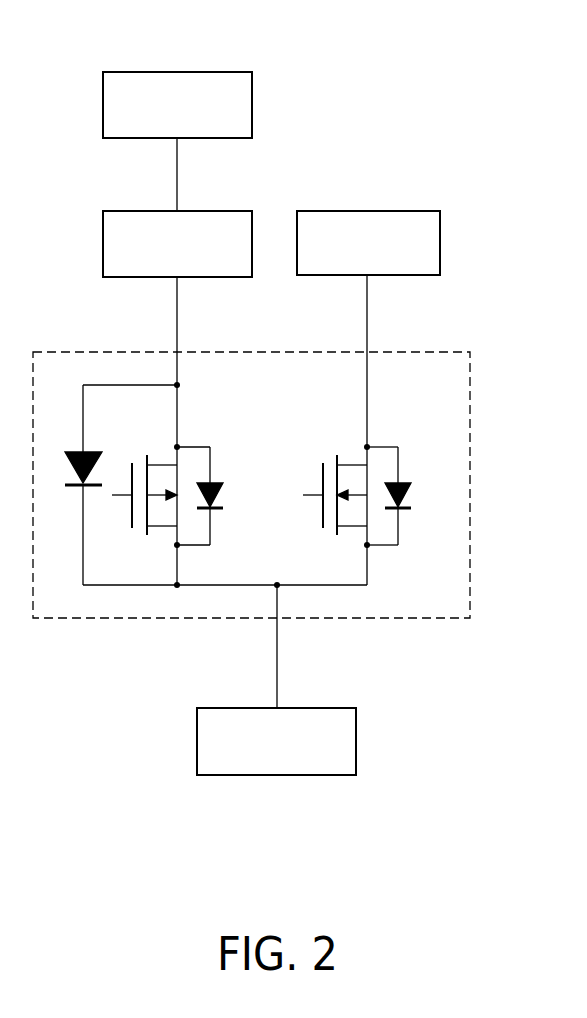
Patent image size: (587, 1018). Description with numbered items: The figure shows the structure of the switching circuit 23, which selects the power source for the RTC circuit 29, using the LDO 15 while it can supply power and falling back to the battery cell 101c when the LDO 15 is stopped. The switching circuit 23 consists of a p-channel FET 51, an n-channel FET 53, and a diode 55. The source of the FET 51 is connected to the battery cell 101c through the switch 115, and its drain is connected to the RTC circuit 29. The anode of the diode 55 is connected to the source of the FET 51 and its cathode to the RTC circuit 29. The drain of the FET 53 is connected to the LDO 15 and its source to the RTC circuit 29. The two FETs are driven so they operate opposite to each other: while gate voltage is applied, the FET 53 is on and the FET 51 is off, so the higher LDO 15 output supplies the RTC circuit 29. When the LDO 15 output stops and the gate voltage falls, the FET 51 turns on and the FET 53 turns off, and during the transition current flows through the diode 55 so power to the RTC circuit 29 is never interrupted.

The battery cell 101c is at (234, 72).
The switch 115 is at (234, 211).
The LDO 15 is at (414, 211).
The switching circuit 23 is at (440, 352).
The p-channel FET 51 is at (212, 430).
The n-channel FET 53 is at (387, 430).
The diode 55 is at (88, 453).
The RTC circuit 29 is at (315, 708).